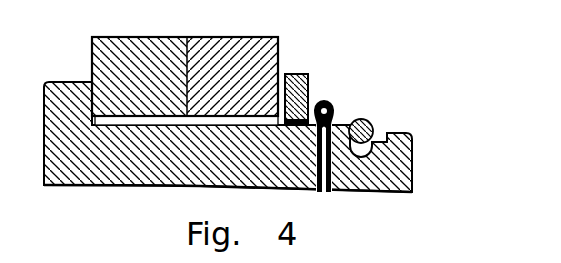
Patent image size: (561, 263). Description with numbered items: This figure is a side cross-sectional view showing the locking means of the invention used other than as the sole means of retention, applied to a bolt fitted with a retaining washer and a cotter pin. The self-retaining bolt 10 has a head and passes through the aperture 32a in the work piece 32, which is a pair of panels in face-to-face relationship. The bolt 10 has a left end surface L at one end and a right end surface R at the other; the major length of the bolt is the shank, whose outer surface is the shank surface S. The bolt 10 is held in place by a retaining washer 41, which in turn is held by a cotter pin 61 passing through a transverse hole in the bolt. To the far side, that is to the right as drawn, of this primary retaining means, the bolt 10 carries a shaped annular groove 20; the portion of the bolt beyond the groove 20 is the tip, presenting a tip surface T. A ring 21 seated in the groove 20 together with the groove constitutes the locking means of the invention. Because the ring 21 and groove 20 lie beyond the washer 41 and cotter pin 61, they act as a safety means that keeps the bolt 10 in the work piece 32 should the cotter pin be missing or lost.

The bolt 10 is at (45, 88).
The left end surface L is at (44, 143).
The work piece 32 is at (221, 37).
The aperture 32a is at (218, 122).
The retaining washer 41 is at (295, 74).
The hairpin spring 61 is at (323, 101).
The shank surface S is at (340, 125).
The ring 21 is at (366, 119).
The annular groove 20 is at (380, 130).
The tip surface T is at (391, 134).
The right end surface R is at (412, 160).